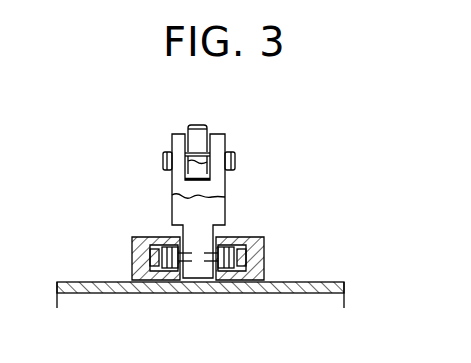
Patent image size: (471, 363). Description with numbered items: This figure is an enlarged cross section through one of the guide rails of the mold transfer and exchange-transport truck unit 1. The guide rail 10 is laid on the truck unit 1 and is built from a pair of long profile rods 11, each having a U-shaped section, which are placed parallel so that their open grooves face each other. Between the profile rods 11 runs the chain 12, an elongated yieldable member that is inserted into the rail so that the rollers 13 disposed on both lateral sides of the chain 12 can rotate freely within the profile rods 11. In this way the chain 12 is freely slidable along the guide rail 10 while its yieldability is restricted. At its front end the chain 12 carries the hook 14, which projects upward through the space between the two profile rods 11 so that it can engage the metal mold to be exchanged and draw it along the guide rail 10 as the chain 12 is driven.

The mold transfer and exchange-transport truck unit 1 is at (335, 281).
The guide rail 10 is at (197, 207).
The profile rods 11 is at (132, 250).
The chain 12 is at (218, 248).
The rollers 13 is at (170, 247).
The hook 14 is at (200, 126).